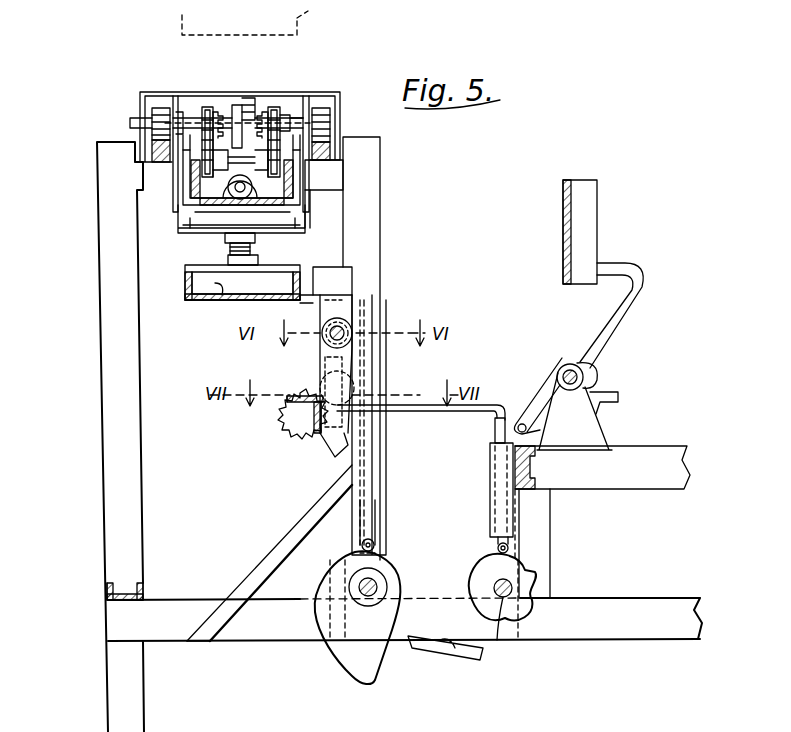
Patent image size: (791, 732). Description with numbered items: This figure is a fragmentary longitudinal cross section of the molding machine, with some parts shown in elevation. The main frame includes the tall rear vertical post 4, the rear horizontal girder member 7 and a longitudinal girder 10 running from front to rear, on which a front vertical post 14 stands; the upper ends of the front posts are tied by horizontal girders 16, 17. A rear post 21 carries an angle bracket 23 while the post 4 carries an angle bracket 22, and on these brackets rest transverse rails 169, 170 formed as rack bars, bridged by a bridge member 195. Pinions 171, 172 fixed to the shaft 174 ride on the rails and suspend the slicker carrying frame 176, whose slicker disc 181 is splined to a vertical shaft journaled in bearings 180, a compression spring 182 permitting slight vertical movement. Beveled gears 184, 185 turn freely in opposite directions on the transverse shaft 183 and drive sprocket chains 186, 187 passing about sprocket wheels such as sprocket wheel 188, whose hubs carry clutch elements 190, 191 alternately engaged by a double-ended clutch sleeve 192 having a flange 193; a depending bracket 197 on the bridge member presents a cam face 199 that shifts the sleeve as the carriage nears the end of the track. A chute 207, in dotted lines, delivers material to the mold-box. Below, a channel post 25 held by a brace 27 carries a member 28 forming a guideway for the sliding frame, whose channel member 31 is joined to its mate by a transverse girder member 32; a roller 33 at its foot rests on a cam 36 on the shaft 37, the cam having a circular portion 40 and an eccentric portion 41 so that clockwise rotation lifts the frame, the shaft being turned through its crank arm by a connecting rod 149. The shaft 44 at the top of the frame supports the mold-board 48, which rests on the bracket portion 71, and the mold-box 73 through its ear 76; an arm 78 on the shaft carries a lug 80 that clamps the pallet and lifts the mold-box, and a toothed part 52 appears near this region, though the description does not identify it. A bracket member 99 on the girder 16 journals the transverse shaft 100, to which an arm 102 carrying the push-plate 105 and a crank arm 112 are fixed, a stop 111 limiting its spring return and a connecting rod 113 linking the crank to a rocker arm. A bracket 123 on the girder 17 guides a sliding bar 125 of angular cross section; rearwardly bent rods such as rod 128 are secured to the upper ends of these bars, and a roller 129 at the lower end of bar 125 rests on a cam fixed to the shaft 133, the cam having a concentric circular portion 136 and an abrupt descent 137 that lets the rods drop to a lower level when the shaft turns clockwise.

The vertical post 4 is at (115, 703).
The horizontal girder member 7 is at (105, 582).
The girder 10 is at (645, 628).
The vertical post 14 is at (550, 515).
The horizontal girder 16 is at (676, 452).
The horizontal girder 17 is at (538, 466).
The post 21 is at (380, 237).
The angle bracket 22 is at (143, 170).
The angle bracket 23 is at (330, 170).
The post 25 is at (345, 470).
The brace 27 is at (278, 535).
The member 28 is at (350, 520).
The channel member 31 is at (340, 333).
The transverse girder member 32 is at (313, 418).
The roller 33 is at (370, 540).
The cam 36 is at (368, 650).
The shaft 37 is at (378, 585).
The circular portion 40 is at (376, 550).
The eccentric portion 41 is at (300, 620).
The shaft 44 is at (345, 325).
The mold-board 48 is at (222, 290).
The ratchet wheel 52 is at (312, 368).
The portion 71 is at (200, 300).
The mold-box 73 is at (185, 282).
The ear 76 is at (335, 280).
The arm 78 is at (345, 378).
The lug 80 is at (330, 448).
The bracket member 99 is at (597, 425).
The transverse shaft 100 is at (569, 364).
The arm 102 is at (642, 305).
The push-plate 105 is at (563, 217).
The stop 111 is at (598, 370).
The crank arm 112 is at (545, 400).
The connecting rod 113 is at (610, 393).
The bracket 123 is at (490, 464).
The bar 125 is at (495, 432).
The rod 128 is at (448, 406).
The anti-friction roller 129 is at (502, 543).
The shaft 133 is at (497, 642).
The circular portion 136 is at (490, 575).
The abrupt descent 137 is at (530, 582).
The connecting rod 149 is at (460, 655).
The transverse rail 169 is at (160, 150).
The transverse rail 170 is at (325, 150).
The pinion 171 is at (170, 100).
The pinion 172 is at (322, 115).
The shaft 174 is at (303, 110).
The slicker carrying frame 176 is at (275, 160).
The bearings 180 is at (215, 212).
The slicker disc 181 is at (260, 260).
The compression spring 182 is at (230, 250).
The transverse shaft 183 is at (195, 180).
The beveled gear 184 is at (195, 170).
The beveled gear 185 is at (200, 140).
The sprocket chain 186 is at (180, 112).
The sprocket chain 187 is at (290, 115).
The sprocket wheel 188 is at (255, 187).
The clutch element 190 is at (200, 118).
The clutch element 191 is at (273, 107).
The double-ended clutch sleeve 192 is at (178, 33).
The circumferential flange 193 is at (206, 107).
The bridge member 195 is at (150, 110).
The depending bracket 197 is at (250, 98).
The cam face 199 is at (240, 100).
The chute 207 is at (308, 13).